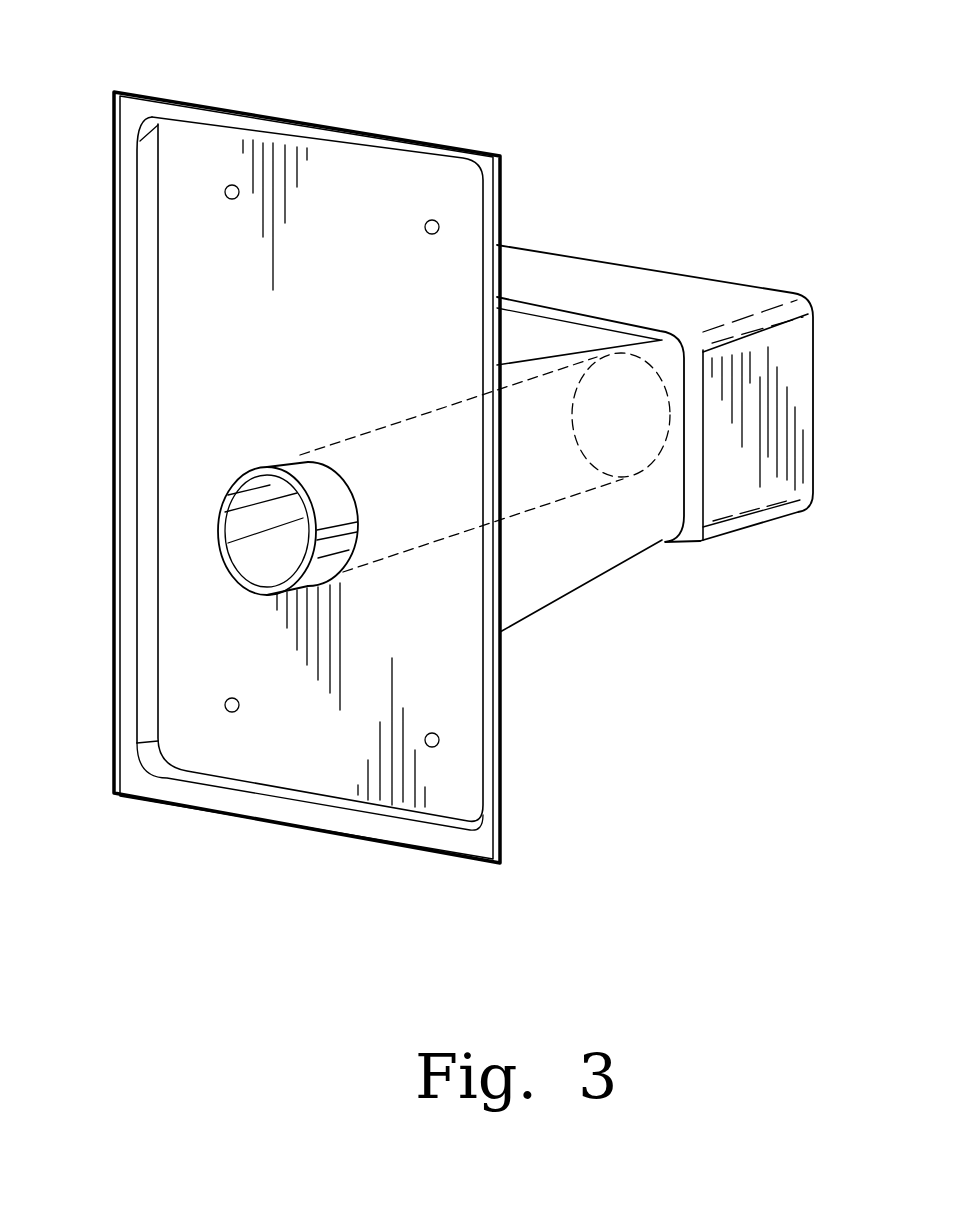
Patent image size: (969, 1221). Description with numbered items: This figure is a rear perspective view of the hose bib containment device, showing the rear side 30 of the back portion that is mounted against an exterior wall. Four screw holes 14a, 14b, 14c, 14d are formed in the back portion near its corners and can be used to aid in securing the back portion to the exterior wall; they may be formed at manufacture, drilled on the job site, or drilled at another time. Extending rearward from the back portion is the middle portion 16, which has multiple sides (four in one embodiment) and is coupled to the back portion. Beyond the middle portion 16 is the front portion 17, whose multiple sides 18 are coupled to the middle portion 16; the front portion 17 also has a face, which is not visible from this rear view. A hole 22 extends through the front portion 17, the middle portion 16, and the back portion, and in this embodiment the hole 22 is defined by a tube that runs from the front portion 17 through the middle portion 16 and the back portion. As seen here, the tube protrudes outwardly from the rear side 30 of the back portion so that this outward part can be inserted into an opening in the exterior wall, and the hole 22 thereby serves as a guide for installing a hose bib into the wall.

The screw hole 14a is at (431, 219).
The screw hole 14b is at (235, 184).
The screw hole 14c is at (432, 748).
The screw hole 14d is at (233, 713).
The middle portion 16 is at (550, 574).
The front portion 17 is at (742, 227).
The sides 18 is at (570, 280).
The hole 22 is at (298, 470).
The rear side 30 is at (193, 298).